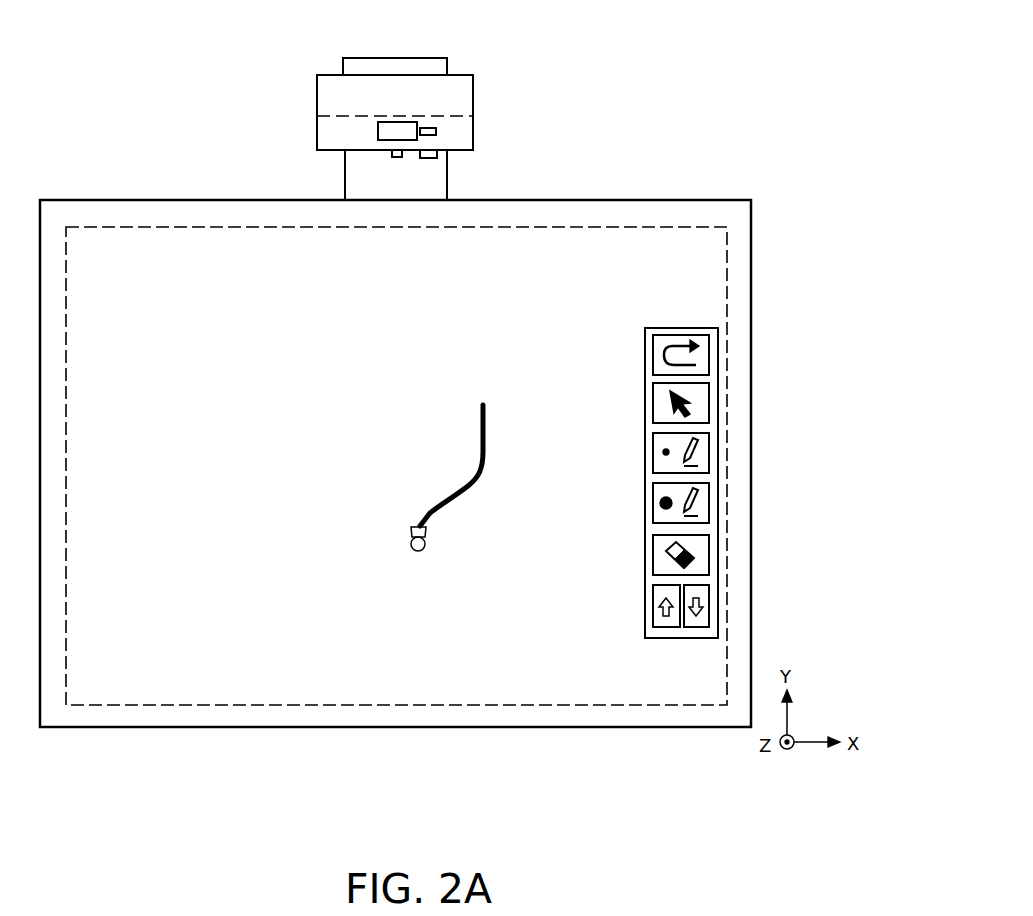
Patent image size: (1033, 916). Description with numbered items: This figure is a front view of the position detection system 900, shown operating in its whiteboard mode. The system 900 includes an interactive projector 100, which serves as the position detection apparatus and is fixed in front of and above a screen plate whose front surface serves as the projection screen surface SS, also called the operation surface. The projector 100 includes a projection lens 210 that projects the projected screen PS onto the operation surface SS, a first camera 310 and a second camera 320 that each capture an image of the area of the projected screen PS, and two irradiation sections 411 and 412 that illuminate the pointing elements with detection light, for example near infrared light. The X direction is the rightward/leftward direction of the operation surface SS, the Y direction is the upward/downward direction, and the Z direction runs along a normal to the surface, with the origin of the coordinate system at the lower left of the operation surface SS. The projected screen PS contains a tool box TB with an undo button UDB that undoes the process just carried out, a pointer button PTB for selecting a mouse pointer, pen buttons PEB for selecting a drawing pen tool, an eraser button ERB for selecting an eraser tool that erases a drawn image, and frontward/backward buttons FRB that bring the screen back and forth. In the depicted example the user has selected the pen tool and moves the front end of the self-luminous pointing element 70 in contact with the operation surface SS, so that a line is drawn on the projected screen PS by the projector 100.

The position detection system 900 is at (681, 97).
The interactive projector 100 is at (473, 96).
The projection lens 210 is at (378, 131).
The first camera 310 is at (436, 131).
The second camera 320 is at (447, 155).
The irradiation section 411 is at (346, 167).
The irradiation section 412 is at (428, 154).
The projection screen surface SS is at (107, 208).
The projected screen PS is at (190, 226).
The tool box TB is at (660, 328).
The undo button UDB is at (653, 352).
The pointer button PTB is at (653, 398).
The pen buttons PEB is at (653, 500).
The eraser button ERB is at (653, 549).
The frontward/backward buttons FRB is at (657, 603).
The self-luminous pointing element 70 is at (410, 546).